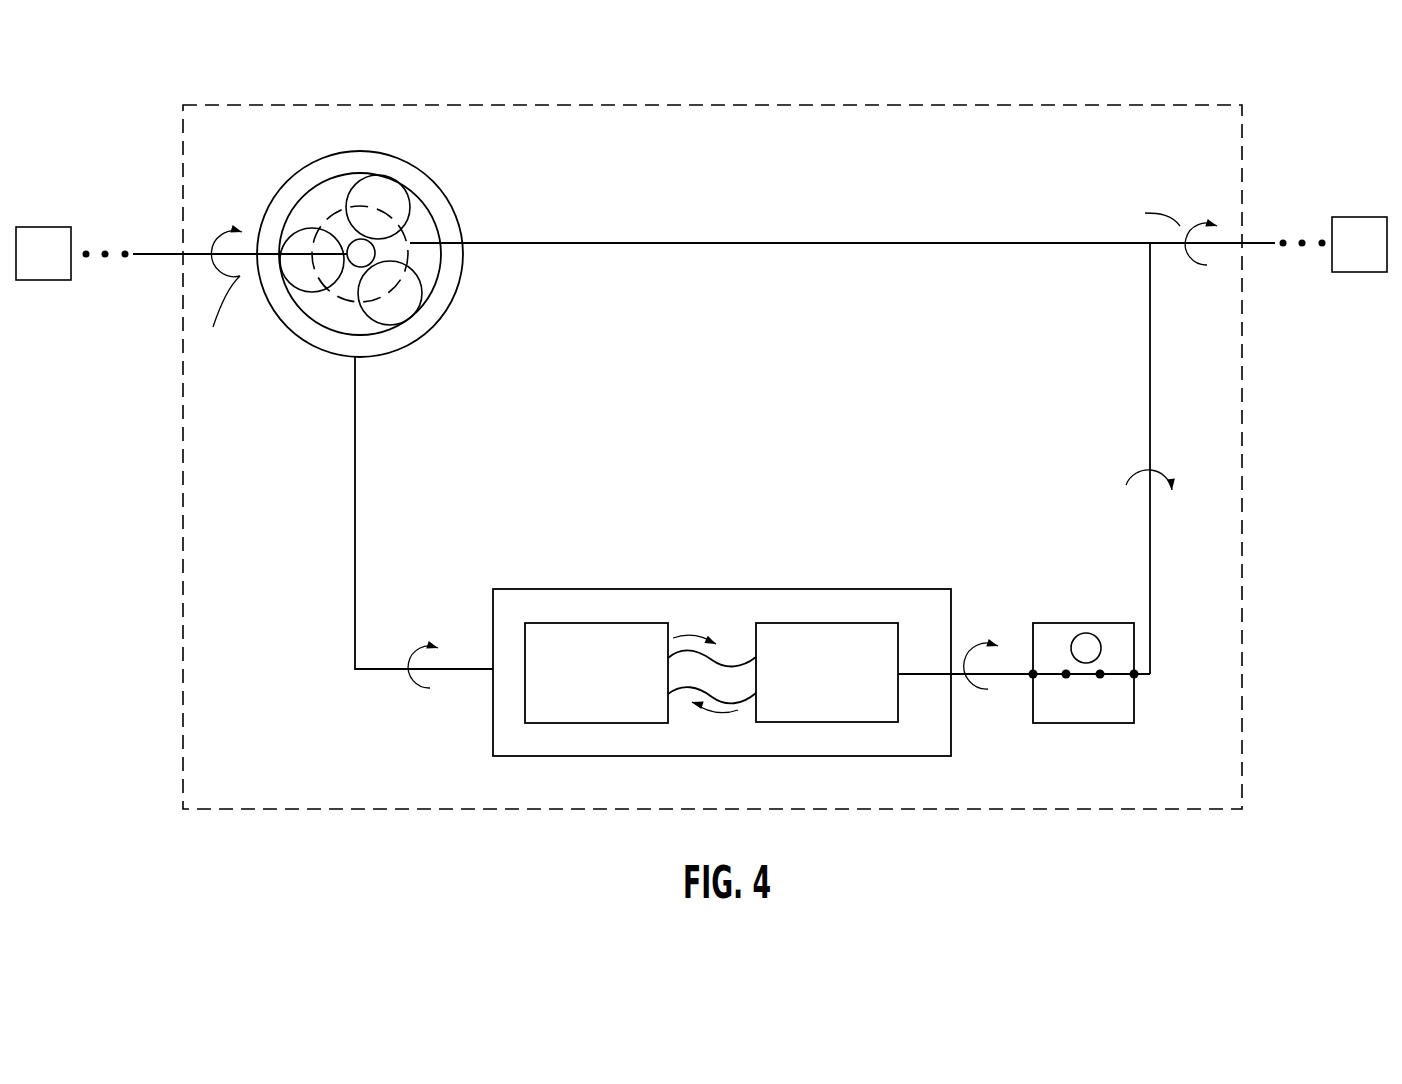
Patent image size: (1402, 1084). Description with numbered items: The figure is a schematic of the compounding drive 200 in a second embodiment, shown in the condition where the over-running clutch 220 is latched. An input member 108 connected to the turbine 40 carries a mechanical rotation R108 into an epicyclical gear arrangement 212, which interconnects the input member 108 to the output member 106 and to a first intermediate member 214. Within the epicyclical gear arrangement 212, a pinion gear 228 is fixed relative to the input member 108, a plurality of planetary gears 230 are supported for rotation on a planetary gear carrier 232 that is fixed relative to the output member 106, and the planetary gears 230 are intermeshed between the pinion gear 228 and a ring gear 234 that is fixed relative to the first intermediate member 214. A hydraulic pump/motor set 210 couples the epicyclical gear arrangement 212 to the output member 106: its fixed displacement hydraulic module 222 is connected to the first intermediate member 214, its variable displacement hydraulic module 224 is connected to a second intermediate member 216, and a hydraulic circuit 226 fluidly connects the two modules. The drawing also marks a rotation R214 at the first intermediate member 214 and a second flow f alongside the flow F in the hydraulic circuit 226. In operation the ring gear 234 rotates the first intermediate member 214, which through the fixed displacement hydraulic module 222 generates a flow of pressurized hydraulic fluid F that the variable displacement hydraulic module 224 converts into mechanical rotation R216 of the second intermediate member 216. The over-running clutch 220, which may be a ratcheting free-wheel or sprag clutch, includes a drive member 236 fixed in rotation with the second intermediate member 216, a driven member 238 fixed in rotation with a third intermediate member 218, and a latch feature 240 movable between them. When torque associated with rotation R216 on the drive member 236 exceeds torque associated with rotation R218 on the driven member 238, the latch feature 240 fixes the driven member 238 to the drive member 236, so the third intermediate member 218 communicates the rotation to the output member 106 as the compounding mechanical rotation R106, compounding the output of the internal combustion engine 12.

The internal combustion engine 12 is at (1373, 256).
The turbine 40 is at (55, 266).
The output member 106 is at (1252, 243).
The input member 108 is at (160, 257).
The compounding drive 200 is at (352, 809).
The hydraulic pump/motor set 210 is at (600, 589).
The epicyclical gear arrangement 212 is at (408, 264).
The first intermediate member 214 is at (355, 481).
The second intermediate member 216 is at (1002, 674).
The third intermediate member 218 is at (1148, 328).
The over-running clutch 220 is at (1068, 623).
The fixed displacement hydraulic module 222 is at (612, 687).
The variable displacement hydraulic module 224 is at (842, 687).
The hydraulic circuit 226 is at (732, 698).
The pinion gear 228 is at (358, 256).
The planetary gears 230 is at (367, 188).
The planetary gear carrier 232 is at (338, 300).
The ring gear 234 is at (452, 233).
The drive member 236 is at (1045, 688).
The driven member 238 is at (1117, 674).
The latch feature 240 is at (1082, 688).
The mechanical rotation of output member R106 is at (1166, 219).
The mechanical rotation of input member R108 is at (221, 296).
The rotation of first shaft R214 is at (412, 625).
The mechanical rotation of second intermediate member R216 is at (975, 648).
The mechanical rotation of third intermediate member R218 is at (1134, 460).
The flow of pressurized hydraulic fluid F is at (685, 637).
The reaction force f is at (722, 712).